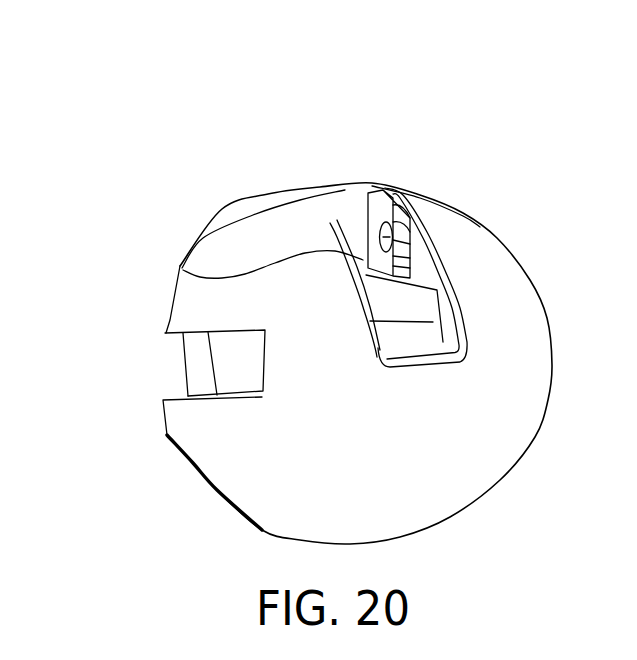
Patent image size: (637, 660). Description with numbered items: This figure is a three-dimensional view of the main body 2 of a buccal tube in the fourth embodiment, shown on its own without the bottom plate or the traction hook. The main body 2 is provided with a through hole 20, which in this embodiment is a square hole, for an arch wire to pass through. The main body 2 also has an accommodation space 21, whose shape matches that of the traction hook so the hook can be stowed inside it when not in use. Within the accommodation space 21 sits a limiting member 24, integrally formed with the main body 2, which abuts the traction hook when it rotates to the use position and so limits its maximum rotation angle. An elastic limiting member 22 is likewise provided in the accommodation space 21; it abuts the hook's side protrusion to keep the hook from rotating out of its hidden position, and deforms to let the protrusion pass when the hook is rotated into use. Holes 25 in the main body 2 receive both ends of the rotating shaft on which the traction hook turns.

The main body 2 is at (308, 480).
The through hole 20 is at (261, 363).
The accommodation space 21 is at (186, 267).
The elastic limiting member 22 is at (398, 226).
The limiting member 24 is at (385, 191).
The hole 25 is at (382, 235).